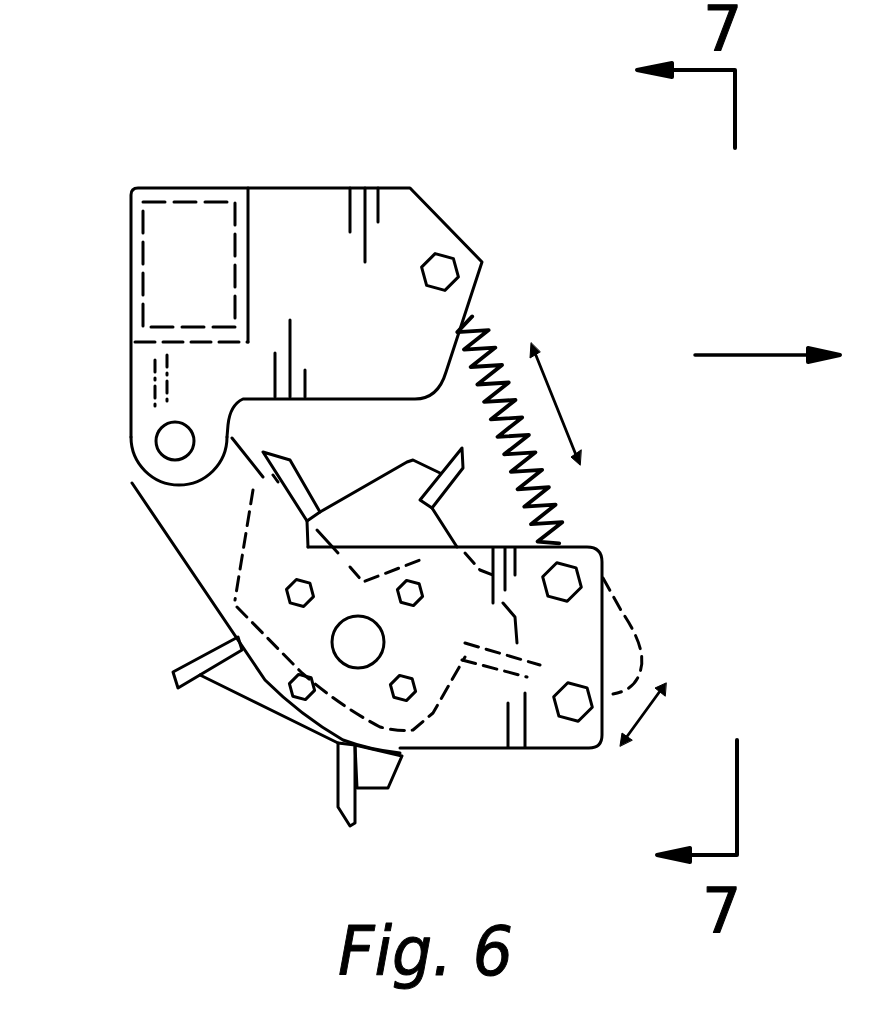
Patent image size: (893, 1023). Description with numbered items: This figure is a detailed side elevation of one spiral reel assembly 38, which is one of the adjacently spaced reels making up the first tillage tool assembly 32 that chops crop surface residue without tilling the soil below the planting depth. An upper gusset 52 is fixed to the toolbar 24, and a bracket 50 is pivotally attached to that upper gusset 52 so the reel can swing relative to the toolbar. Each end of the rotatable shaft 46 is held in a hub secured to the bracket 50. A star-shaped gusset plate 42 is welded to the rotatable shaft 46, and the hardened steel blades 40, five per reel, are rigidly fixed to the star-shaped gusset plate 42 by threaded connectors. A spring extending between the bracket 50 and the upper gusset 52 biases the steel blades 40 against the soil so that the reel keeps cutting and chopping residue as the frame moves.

The toolbar 24 is at (145, 267).
The upper gusset 52 is at (412, 218).
The first tillage tool assembly 32 is at (658, 488).
The spiral reel assembly 38 is at (630, 560).
The bracket 50 is at (583, 657).
The hardened steel blades 40 is at (198, 655).
The star-shaped gusset plate 42 is at (235, 692).
The rotatable shaft 46 is at (385, 643).